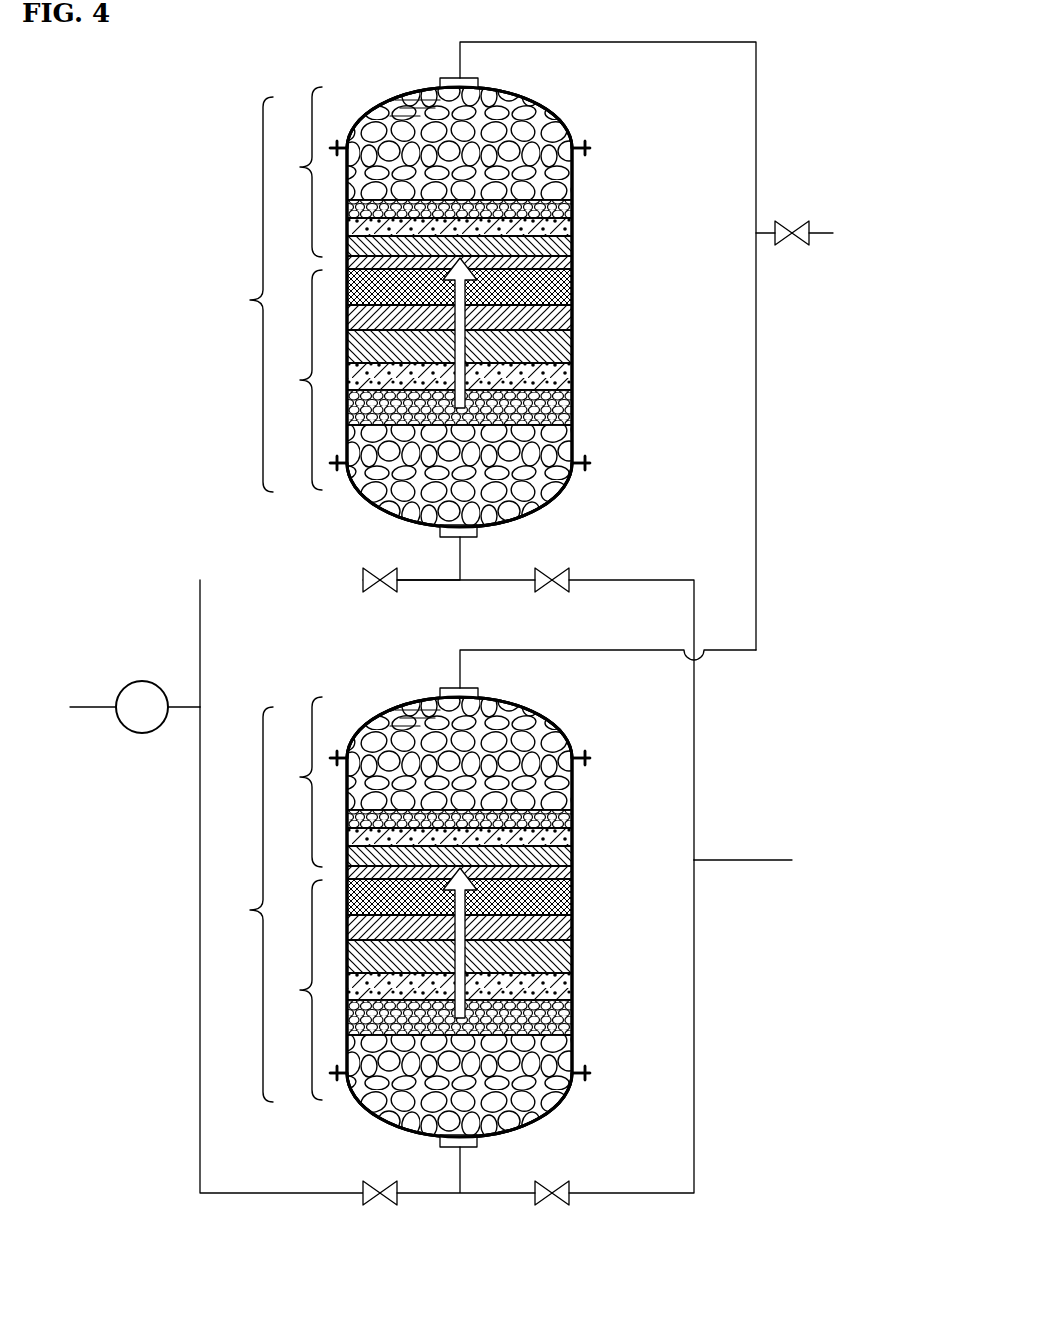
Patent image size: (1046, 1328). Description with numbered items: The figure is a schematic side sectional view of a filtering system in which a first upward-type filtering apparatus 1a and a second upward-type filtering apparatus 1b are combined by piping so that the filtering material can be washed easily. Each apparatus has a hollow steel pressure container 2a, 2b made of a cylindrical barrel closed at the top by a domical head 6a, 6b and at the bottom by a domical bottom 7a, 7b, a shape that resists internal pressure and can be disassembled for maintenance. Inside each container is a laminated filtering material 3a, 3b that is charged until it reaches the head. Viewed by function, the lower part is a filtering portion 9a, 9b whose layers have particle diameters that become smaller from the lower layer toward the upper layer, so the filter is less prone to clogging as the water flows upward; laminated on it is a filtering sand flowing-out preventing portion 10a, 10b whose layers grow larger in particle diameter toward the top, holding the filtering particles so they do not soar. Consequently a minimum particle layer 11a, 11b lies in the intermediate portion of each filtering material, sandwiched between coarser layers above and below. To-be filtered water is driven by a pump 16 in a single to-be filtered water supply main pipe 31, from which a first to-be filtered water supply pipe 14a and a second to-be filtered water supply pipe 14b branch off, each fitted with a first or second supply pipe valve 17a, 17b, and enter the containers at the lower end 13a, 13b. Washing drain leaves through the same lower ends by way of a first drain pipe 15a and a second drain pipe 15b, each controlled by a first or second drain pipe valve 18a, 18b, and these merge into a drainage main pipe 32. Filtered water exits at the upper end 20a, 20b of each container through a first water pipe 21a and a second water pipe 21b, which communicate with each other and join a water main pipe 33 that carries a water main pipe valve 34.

The first upward-type filtering apparatus 1a is at (195, 118).
The second upward-type filtering apparatus 1b is at (406, 862).
The pressure container 2a is at (573, 240).
The pressure container 2b is at (488, 917).
The filtering material 3a is at (431, 308).
The filtering material 3b is at (431, 918).
The domical head 6a is at (561, 112).
The domical head 6b is at (483, 727).
The domical bottom 7a is at (548, 505).
The domical bottom 7b is at (480, 1108).
The filtering portion 9a is at (424, 400).
The filtering portion 9b is at (424, 1010).
The filtering sand flowing-out preventing portion 10a is at (422, 178).
The filtering sand flowing-out preventing portion 10b is at (422, 788).
The minimum particle layer 11a is at (573, 292).
The minimum particle layer 11b is at (494, 894).
The lower end 13a is at (478, 532).
The lower end 13b is at (509, 1152).
The first to-be filtered water supply pipe 14a is at (205, 580).
The second to-be filtered water supply pipe 14b is at (224, 1185).
The first drain pipe 15a is at (662, 580).
The second drain pipe 15b is at (662, 1185).
The pump 16 is at (140, 681).
The first supply pipe valve 17a is at (365, 592).
The second supply pipe valve 17b is at (365, 1205).
The first drain pipe valve 18a is at (535, 592).
The second drain pipe valve 18b is at (535, 1205).
The upper end 20a is at (440, 80).
The upper end 20b is at (416, 679).
The first water pipe 21a is at (650, 42).
The second water pipe 21b is at (652, 650).
The to-be filtered water supply main pipe 31 is at (100, 706).
The drainage main pipe 32 is at (756, 860).
The water main pipe 33 is at (822, 232).
The water main pipe valve 34 is at (788, 228).